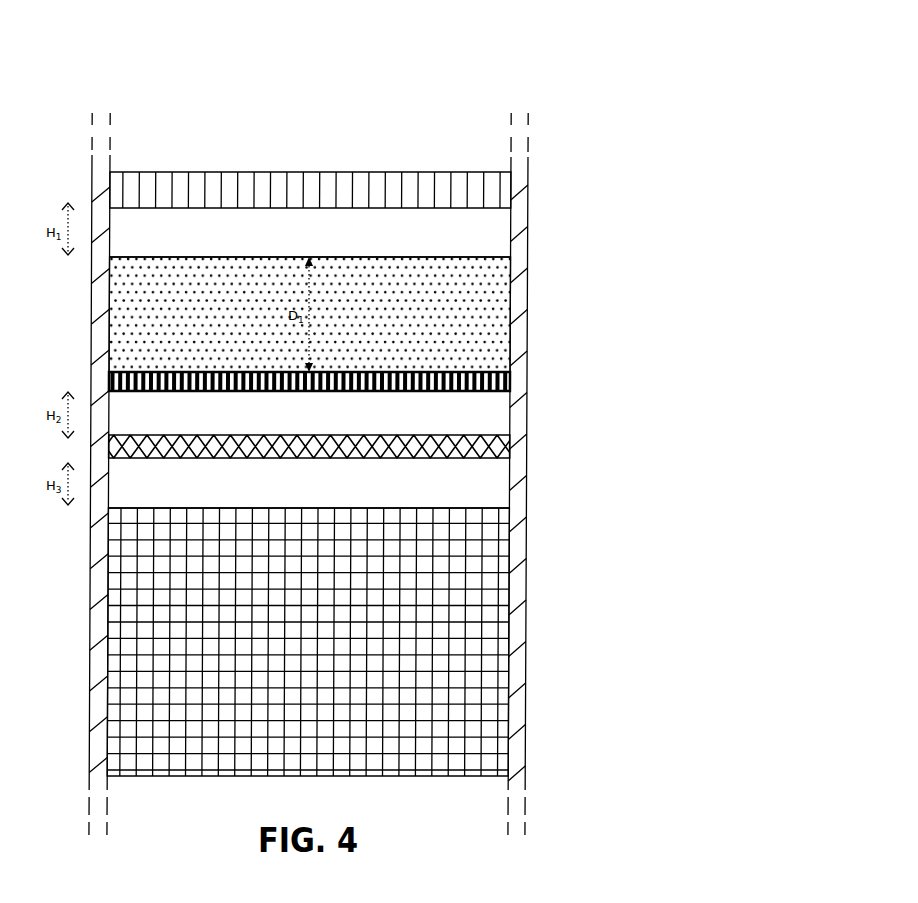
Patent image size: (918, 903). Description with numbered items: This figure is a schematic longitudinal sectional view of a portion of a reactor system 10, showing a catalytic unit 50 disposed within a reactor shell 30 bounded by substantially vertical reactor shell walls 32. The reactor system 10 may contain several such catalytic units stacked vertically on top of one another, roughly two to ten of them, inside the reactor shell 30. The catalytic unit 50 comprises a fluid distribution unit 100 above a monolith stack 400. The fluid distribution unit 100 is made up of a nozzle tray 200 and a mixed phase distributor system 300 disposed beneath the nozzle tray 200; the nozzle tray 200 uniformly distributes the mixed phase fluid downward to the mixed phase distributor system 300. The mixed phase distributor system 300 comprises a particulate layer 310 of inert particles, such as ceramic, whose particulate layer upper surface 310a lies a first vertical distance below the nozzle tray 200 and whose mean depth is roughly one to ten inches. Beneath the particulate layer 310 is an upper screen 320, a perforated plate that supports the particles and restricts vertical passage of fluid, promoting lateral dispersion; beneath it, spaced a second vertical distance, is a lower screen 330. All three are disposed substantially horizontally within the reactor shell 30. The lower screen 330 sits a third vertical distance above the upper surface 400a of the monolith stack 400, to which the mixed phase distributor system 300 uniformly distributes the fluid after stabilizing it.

The reactor system 10 is at (498, 60).
The reactor shell 30 is at (540, 156).
The reactor shell walls 32 is at (517, 753).
The catalytic unit 50 is at (743, 162).
The fluid distribution unit 100 is at (703, 162).
The nozzle tray 200 is at (492, 197).
The mixed phase distributor system 300 is at (643, 237).
The particulate layer 310 is at (468, 330).
The particulate layer upper surface 310a is at (499, 255).
The upper screen 320 is at (490, 374).
The lower screen 330 is at (490, 437).
The monolith stack 400 is at (455, 608).
The upper surface of monolith stack 400a is at (481, 504).